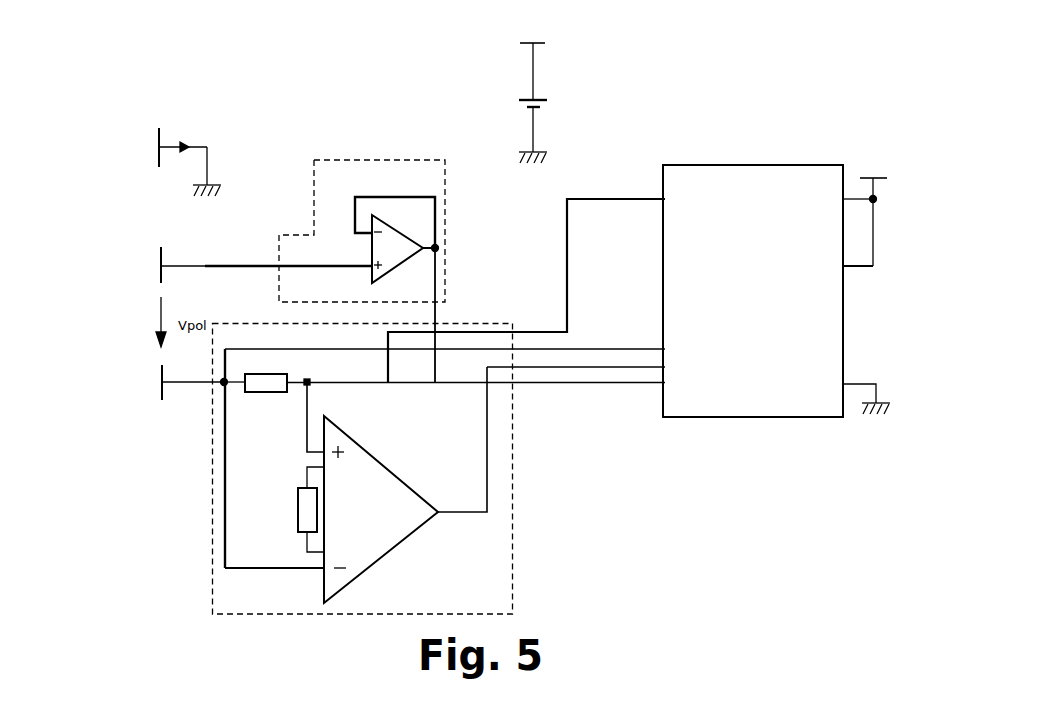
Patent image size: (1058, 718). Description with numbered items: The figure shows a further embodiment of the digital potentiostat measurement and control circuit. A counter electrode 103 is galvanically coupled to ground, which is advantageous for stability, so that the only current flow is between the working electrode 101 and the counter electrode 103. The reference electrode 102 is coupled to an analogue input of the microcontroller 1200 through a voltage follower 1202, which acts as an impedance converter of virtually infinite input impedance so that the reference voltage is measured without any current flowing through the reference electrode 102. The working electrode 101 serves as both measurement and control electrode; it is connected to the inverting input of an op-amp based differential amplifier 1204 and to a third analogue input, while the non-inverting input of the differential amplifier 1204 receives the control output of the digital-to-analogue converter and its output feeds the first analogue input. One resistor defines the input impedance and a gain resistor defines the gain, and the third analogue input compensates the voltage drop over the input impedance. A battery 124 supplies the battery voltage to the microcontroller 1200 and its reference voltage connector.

The working electrode 101 is at (145, 398).
The reference electrode 102 is at (153, 268).
The counter electrode 103 is at (132, 125).
The battery 124 is at (557, 73).
The microcontroller 1200 is at (743, 400).
The voltage follower 1202 is at (343, 172).
The differential amplifier 1204 is at (500, 555).